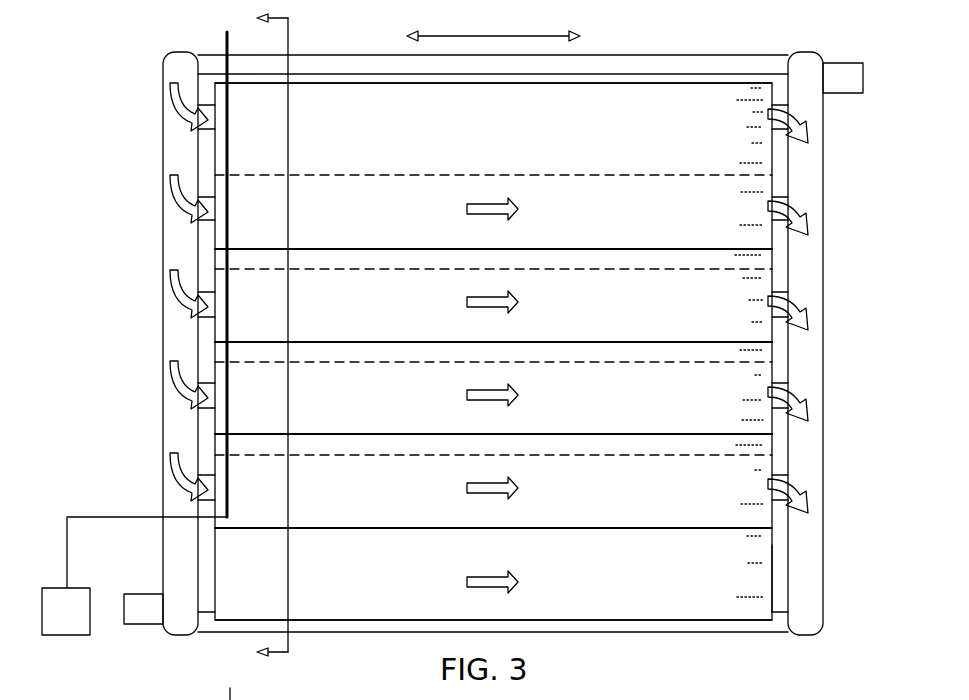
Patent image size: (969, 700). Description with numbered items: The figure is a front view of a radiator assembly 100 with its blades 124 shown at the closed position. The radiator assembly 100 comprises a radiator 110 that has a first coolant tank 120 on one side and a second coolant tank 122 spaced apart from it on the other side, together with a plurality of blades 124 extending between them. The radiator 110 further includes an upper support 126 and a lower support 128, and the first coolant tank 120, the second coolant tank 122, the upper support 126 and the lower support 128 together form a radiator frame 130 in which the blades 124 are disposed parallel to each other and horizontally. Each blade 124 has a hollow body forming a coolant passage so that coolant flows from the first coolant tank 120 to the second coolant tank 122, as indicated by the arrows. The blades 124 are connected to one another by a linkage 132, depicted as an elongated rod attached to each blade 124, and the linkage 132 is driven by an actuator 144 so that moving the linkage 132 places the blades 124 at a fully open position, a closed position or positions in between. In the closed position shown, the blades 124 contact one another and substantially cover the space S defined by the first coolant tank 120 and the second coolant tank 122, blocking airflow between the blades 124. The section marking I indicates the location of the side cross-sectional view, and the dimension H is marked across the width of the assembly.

The radiator assembly 100 is at (101, 221).
The radiator 110 is at (832, 207).
The first coolant tank 120 is at (172, 338).
The second coolant tank 122 is at (812, 368).
The blades 124 is at (758, 550).
The upper support 126 is at (673, 62).
The lower support 128 is at (673, 625).
The radiator frame 130 is at (730, 50).
The linkage 132 is at (228, 437).
The actuator 144 is at (78, 588).
The space S is at (782, 585).
The section line I- I is at (264, 337).
The width dimension H is at (493, 26).